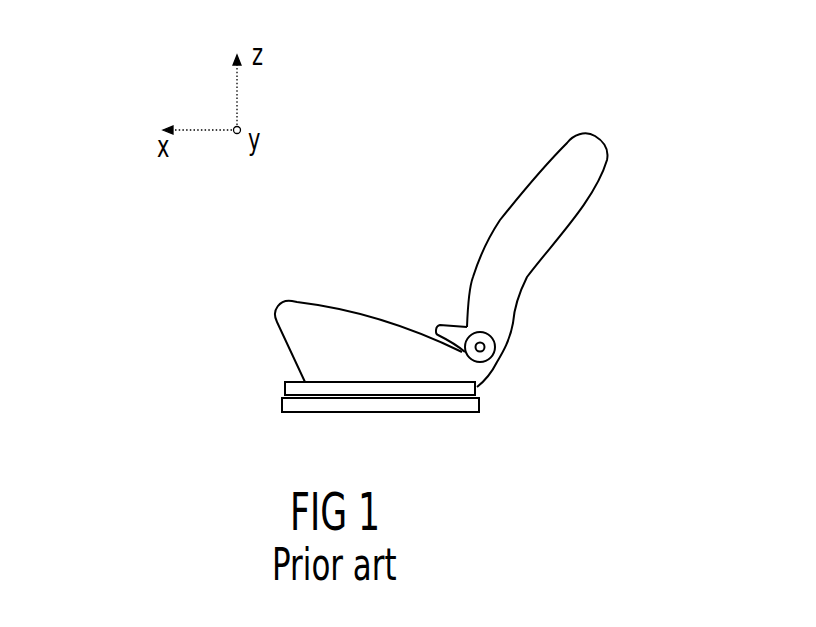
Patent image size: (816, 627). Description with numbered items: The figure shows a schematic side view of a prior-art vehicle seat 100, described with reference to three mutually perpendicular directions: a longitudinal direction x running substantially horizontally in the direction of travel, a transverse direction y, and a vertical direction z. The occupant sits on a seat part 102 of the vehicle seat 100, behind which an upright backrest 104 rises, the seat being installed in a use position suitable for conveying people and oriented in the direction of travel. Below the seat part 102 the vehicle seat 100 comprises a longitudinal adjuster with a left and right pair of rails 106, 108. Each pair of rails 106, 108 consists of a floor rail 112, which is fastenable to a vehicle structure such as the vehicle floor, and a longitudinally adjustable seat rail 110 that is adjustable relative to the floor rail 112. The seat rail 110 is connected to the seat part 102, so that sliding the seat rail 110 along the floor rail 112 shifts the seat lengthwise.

The vehicle seat 100 is at (378, 145).
The seat part 102 is at (320, 325).
The backrest 104 is at (542, 210).
The pair of rails 106 is at (254, 372).
The pair of rails 108 is at (260, 384).
The seat rail 110 is at (478, 388).
The floor rail 112 is at (479, 407).